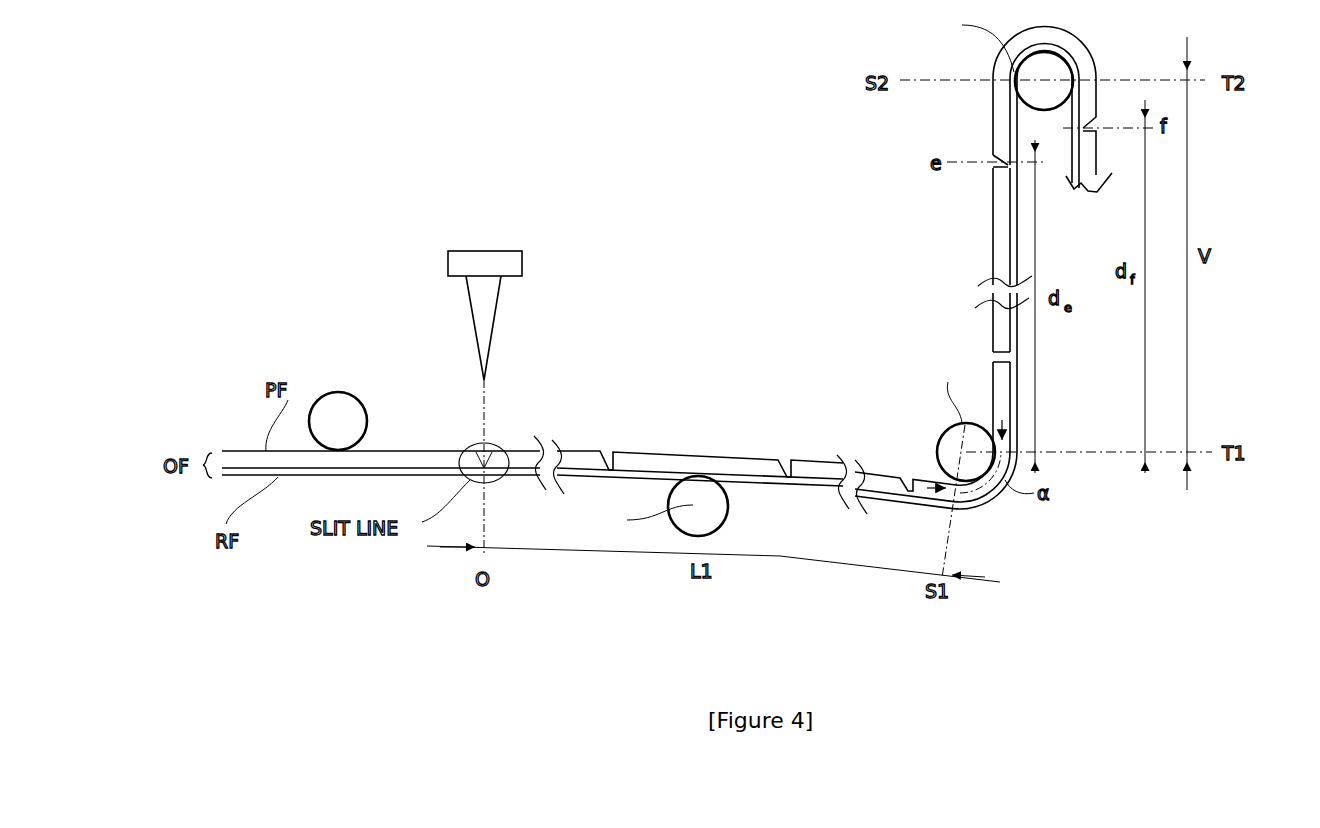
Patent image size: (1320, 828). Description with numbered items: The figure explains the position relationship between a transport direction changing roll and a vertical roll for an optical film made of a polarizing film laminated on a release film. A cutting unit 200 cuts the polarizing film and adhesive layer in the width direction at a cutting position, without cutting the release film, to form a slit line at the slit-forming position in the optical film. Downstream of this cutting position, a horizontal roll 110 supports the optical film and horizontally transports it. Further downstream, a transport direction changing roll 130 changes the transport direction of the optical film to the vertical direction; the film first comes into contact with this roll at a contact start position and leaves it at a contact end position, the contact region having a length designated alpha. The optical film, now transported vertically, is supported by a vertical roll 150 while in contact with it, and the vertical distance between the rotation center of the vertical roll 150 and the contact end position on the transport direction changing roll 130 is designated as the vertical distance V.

The horizontal roll 110 is at (729, 514).
The transport direction changing roll 130 is at (940, 433).
The vertical roll 150 is at (1050, 111).
The cutting unit 200 is at (488, 251).